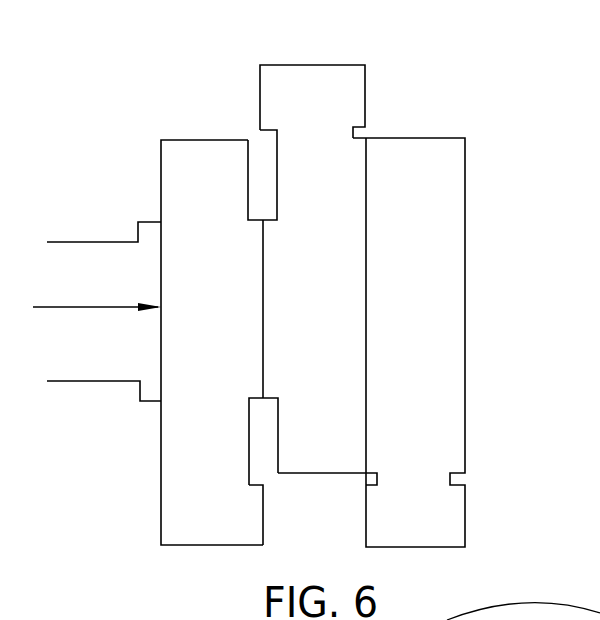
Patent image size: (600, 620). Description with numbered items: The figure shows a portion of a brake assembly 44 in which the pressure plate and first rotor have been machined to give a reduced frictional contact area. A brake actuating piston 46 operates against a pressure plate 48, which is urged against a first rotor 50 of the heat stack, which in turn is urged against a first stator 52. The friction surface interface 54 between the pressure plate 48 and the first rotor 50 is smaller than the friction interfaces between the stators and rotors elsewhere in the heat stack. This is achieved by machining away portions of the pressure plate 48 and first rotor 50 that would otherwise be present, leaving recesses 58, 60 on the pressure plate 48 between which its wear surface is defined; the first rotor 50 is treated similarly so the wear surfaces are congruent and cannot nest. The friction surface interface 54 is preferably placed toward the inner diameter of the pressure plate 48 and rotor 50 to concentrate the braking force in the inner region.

The brake assembly 44 is at (437, 87).
The brake actuating piston 46 is at (82, 262).
The pressure plate 48 is at (187, 140).
The first rotor 50 is at (287, 65).
The first stator 52 is at (420, 138).
The friction surface interface 54 is at (262, 365).
The recess 58 is at (250, 177).
The recess 60 is at (250, 463).